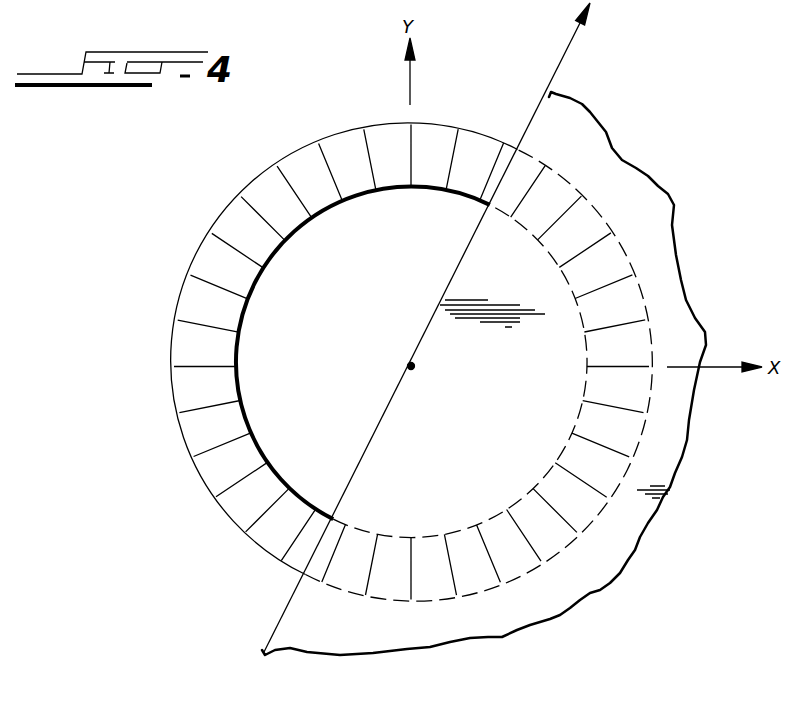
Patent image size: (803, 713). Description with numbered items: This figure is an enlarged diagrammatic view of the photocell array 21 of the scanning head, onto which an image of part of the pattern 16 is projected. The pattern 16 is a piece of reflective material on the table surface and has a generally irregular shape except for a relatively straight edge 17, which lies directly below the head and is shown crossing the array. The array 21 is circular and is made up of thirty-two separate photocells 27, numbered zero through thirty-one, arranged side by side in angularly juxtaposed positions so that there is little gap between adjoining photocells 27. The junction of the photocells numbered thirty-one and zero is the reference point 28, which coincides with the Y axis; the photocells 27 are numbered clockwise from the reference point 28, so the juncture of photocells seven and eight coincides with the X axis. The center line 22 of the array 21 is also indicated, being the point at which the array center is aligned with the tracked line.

The pattern 16 is at (675, 190).
The straight edge 17 is at (528, 126).
The array 21 is at (185, 213).
The center line 22 is at (409, 362).
The photocells 27 is at (178, 302).
The reference point 28 is at (410, 137).